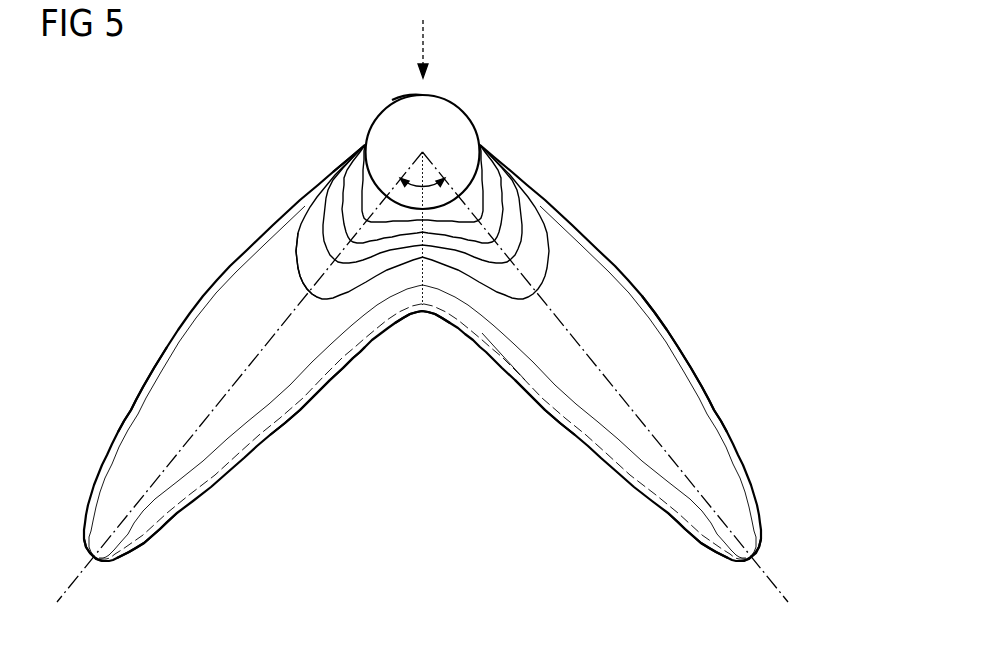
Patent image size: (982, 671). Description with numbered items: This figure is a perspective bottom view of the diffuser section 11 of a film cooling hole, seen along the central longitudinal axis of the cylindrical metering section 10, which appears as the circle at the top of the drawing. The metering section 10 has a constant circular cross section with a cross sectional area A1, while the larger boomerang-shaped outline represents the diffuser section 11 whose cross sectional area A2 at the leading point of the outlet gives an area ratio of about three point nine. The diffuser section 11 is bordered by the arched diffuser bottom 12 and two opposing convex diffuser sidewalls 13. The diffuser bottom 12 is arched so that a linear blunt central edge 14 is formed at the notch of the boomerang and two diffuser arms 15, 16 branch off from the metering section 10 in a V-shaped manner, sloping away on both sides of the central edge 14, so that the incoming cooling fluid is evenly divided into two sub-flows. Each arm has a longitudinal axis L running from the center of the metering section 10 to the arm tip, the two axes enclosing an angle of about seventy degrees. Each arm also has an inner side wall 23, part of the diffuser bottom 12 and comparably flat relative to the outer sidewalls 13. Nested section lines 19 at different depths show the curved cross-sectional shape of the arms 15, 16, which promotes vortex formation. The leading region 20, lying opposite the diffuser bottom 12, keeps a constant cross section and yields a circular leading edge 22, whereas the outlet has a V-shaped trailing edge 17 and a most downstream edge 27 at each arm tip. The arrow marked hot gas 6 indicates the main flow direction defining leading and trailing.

The hot gas 6 is at (426, 42).
The metering section 10 is at (350, 131).
The diffuser section 11 is at (698, 348).
The diffuser bottom 12 is at (510, 350).
The diffuser sidewall 13 is at (134, 402).
The central edge 14 is at (417, 273).
The diffuser arm 15 is at (700, 532).
The diffuser arm 16 is at (147, 532).
The trailing edge 17 is at (347, 369).
The section lines 19 is at (518, 196).
The leading region 20 is at (447, 118).
The leading edge 22 is at (392, 100).
The inner side wall 23 is at (300, 411).
The most downstream edge 27 is at (88, 553).
The cross sectional area of the metering section A1 is at (362, 146).
The cross sectional area of the diffuser section A2 is at (298, 266).
The longitudinal axis L is at (238, 380).